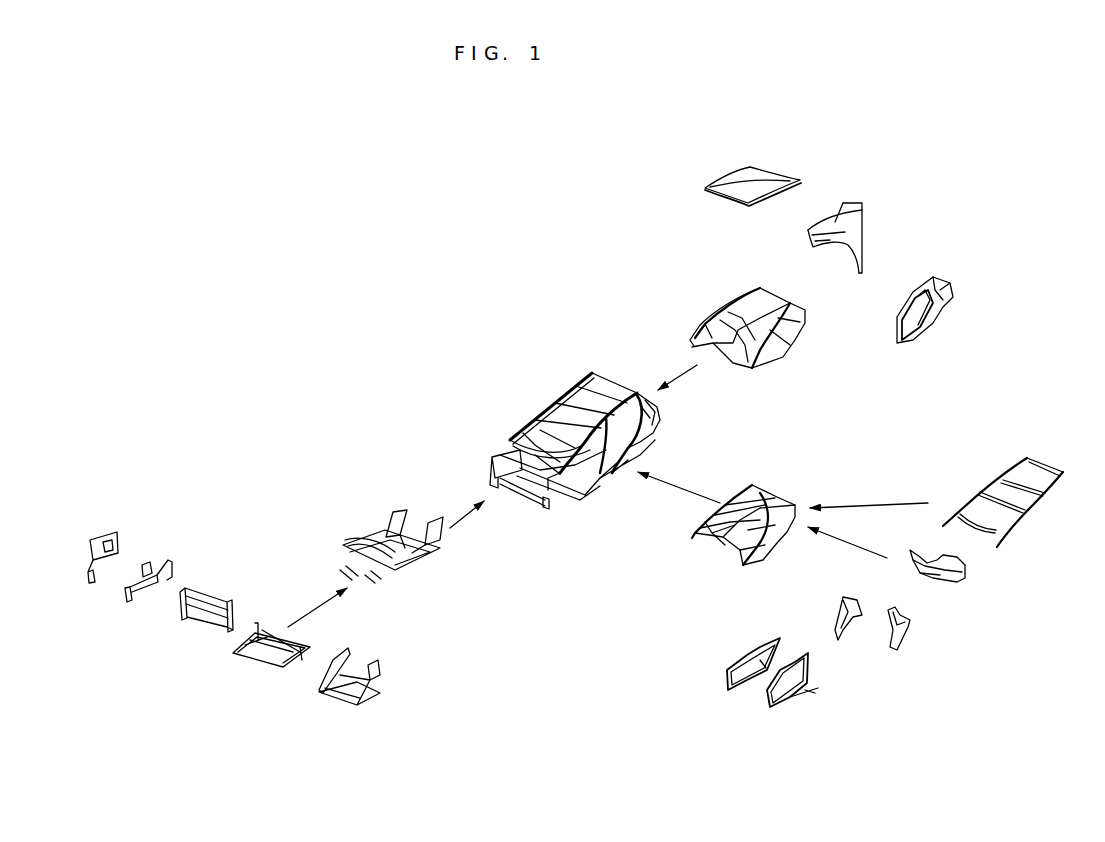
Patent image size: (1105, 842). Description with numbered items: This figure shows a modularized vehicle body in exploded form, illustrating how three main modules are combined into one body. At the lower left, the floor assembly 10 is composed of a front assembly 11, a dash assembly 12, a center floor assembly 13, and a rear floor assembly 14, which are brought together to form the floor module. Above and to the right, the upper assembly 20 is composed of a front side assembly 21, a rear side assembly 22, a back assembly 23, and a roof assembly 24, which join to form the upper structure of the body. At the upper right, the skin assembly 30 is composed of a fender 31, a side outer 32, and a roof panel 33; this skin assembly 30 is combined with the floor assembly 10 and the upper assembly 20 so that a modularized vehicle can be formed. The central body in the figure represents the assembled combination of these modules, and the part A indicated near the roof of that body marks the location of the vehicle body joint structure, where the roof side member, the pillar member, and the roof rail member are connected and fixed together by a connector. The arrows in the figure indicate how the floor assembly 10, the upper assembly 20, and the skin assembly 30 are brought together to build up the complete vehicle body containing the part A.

The part A is at (667, 397).
The floor assembly 10 is at (325, 764).
The front assembly 11 is at (90, 582).
The dash assembly 12 is at (197, 618).
The center floor assembly 13 is at (260, 657).
The rear floor assembly 14 is at (342, 687).
The upper assembly 20 is at (1057, 585).
The front side assembly 21 is at (797, 693).
The rear side assembly 22 is at (907, 638).
The back assembly 23 is at (942, 578).
The roof assembly 24 is at (1028, 503).
The skin assembly 30 is at (841, 121).
The fender 31 is at (858, 231).
The side outer 32 is at (953, 287).
The roof panel 33 is at (767, 177).